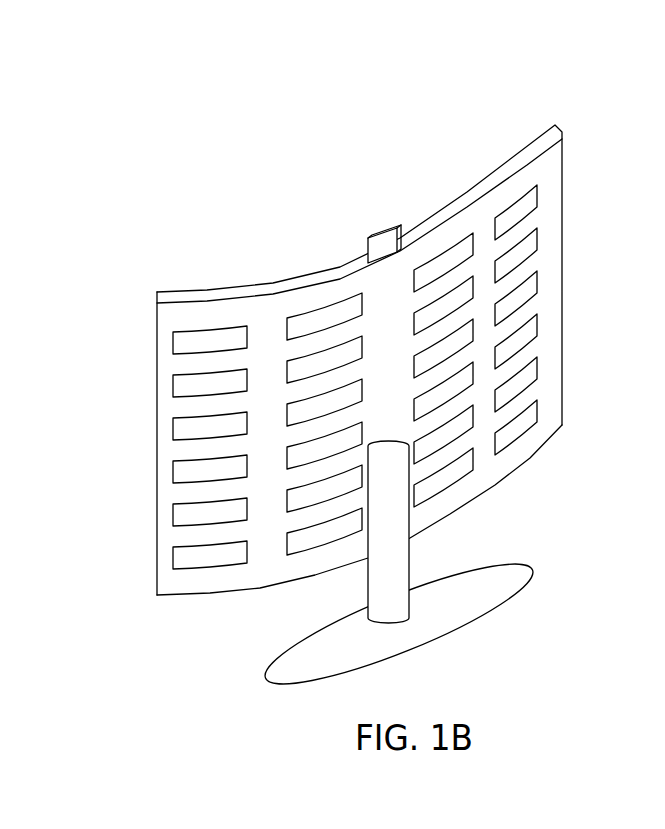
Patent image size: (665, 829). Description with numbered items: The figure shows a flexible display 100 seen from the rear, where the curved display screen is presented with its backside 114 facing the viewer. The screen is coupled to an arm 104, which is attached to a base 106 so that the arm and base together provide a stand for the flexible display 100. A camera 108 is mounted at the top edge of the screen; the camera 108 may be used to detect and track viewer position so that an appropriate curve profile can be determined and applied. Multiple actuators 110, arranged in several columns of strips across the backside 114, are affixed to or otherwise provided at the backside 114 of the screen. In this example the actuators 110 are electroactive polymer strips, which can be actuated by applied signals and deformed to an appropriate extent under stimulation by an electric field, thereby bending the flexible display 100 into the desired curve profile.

The flexible display 100 is at (403, 362).
The arm 104 is at (400, 555).
The base 106 is at (510, 580).
The camera 108 is at (378, 237).
The actuators 110 is at (533, 295).
The backside 114 is at (553, 207).